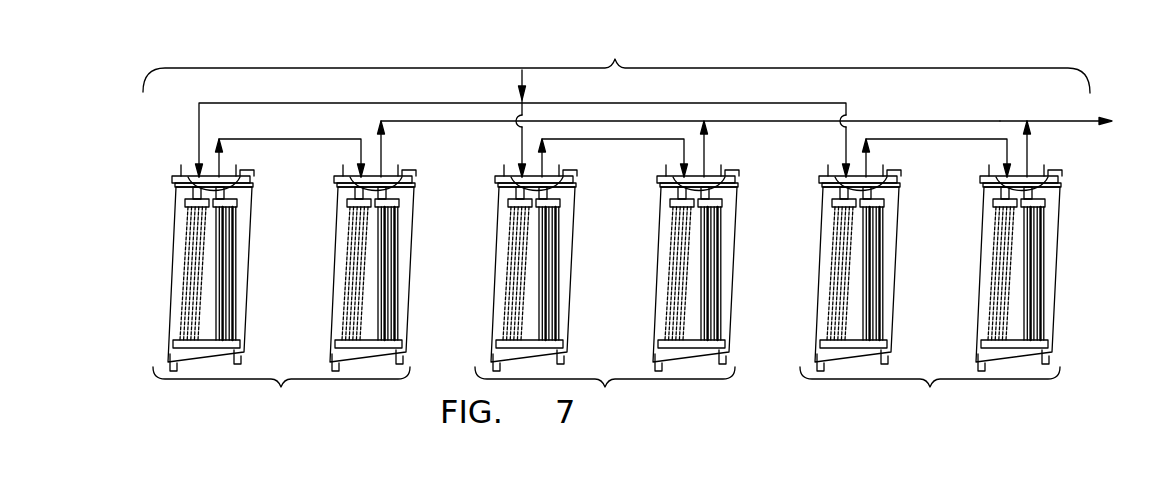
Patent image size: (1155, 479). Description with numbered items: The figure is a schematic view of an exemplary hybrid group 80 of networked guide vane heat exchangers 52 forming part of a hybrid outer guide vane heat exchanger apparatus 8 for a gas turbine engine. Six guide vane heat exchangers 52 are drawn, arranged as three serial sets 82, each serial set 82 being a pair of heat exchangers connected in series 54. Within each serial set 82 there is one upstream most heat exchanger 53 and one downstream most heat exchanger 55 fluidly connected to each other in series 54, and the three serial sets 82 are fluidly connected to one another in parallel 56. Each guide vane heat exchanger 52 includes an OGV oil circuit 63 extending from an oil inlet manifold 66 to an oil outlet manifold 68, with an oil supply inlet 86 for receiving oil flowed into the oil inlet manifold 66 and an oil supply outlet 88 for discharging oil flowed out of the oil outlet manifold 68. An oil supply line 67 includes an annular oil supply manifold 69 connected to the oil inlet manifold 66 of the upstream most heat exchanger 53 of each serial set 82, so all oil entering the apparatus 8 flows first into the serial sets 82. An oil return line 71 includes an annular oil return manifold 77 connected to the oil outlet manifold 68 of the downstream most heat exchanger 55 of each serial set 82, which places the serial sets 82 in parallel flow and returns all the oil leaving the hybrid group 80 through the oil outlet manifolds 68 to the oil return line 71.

The hybrid outer guide vane heat exchanger apparatus 8 is at (1108, 65).
The guide vane heat exchangers 52 is at (140, 393).
The upstream most heat exchanger 53 is at (190, 213).
The series 54 is at (606, 391).
The downstream most heat exchanger 55 is at (235, 217).
The parallel 56 is at (616, 61).
The OGV oil circuit 63 is at (1050, 278).
The oil inlet manifold 66 is at (990, 205).
The oil supply line 67 is at (524, 73).
The oil outlet manifold 68 is at (1038, 203).
The annular oil supply manifold 69 is at (645, 103).
The oil return line 71 is at (1038, 120).
The annular oil return manifold 77 is at (738, 122).
The hybrid group 80 is at (147, 258).
The serial sets 82 is at (333, 272).
The oil supply inlet 86 is at (355, 186).
The oil supply outlet 88 is at (398, 190).